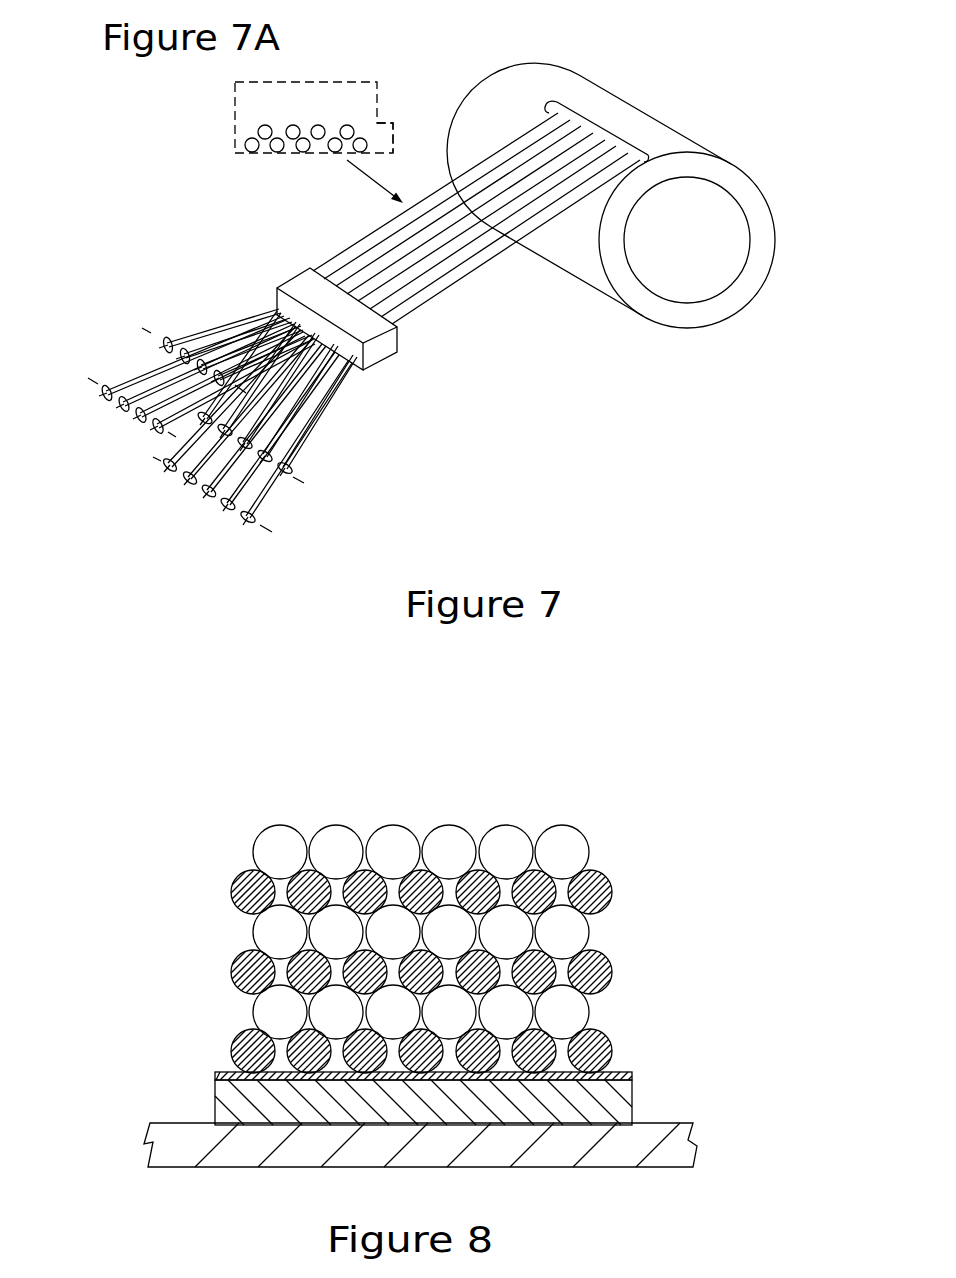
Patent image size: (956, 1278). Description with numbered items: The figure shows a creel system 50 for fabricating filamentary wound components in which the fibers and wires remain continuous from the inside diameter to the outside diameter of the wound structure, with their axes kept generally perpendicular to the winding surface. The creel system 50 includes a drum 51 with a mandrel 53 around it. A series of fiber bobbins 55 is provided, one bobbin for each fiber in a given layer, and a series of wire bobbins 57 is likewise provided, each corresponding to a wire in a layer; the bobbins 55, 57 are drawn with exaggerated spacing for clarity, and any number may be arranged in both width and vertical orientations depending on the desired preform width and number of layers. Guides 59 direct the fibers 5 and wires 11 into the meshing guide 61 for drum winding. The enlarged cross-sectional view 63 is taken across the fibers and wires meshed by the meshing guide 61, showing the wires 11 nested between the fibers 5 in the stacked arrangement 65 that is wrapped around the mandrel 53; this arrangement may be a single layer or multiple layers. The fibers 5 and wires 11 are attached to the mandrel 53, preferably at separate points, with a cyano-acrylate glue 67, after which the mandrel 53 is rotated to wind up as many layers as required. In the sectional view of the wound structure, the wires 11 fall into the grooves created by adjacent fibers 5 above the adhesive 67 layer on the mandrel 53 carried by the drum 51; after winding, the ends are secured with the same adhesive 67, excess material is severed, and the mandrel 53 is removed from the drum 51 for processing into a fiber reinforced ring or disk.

In FIG. 7A, the fibers 5 is at (252, 153).
In FIG. 7, the fibers 5 is at (320, 413).
In FIG. 8, the fibers 5 is at (608, 1052).
In FIG. 7A, the wires 11 is at (259, 129).
In FIG. 7, the wires 11 is at (133, 365).
In FIG. 8, the wires 11 is at (578, 1012).
In FIG. 7, the creel system 50 is at (623, 408).
In FIG. 7, the drum 51 is at (725, 290).
In FIG. 8, the drum 51 is at (683, 1150).
In FIG. 7, the mandrel 53 is at (775, 240).
In FIG. 8, the mandrel 53 is at (618, 1105).
In FIG. 7, the fiber bobbins 55 is at (163, 506).
In FIG. 7, the wire bobbins 57 is at (92, 416).
In FIG. 7, the guides 59 is at (173, 330).
In FIG. 7, the meshing guide 61 is at (390, 360).
In FIG. 7A, the enlarged cross-sectional view 63 is at (337, 76).
In FIG. 7A, the stacked arrangement 65 is at (398, 132).
In FIG. 7, the cyano-acrylate glue 67 is at (557, 101).
In FIG. 8, the cyano-acrylate glue 67 is at (215, 1075).